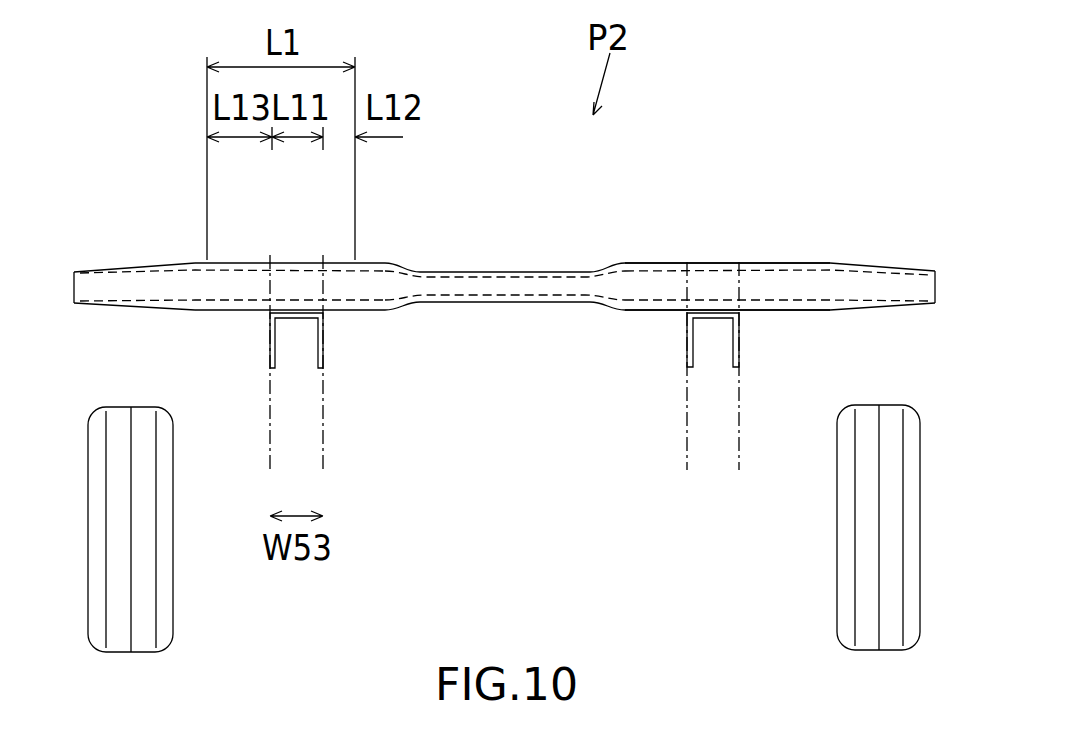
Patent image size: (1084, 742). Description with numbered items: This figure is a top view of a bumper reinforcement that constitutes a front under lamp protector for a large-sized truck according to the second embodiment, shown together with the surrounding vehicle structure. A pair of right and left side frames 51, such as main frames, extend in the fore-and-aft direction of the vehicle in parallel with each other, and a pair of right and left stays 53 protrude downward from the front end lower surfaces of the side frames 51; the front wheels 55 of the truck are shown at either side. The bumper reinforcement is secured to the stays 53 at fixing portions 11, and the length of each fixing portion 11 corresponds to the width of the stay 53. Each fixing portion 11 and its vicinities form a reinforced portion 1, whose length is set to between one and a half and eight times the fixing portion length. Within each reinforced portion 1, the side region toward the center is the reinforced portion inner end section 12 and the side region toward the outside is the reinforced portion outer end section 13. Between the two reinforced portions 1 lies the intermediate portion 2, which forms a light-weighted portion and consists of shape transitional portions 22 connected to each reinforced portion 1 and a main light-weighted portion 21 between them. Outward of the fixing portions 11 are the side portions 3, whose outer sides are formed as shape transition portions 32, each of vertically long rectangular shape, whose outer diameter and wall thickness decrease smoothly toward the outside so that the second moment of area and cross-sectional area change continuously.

The reinforced portion 1 is at (346, 287).
The intermediate portion 2 is at (613, 160).
The side portion 3 is at (190, 266).
The fixing portion 11 is at (713, 268).
The reinforced portion inner end section 12 is at (657, 268).
The reinforced portion outer end section 13 is at (778, 268).
The main light-weighted portion 21 is at (508, 270).
The shape transitional portion 22 is at (393, 268).
The shape transition portion 32 is at (100, 286).
The side frame 51 is at (323, 427).
The stay 53 is at (268, 346).
The front wheel 55 is at (165, 595).